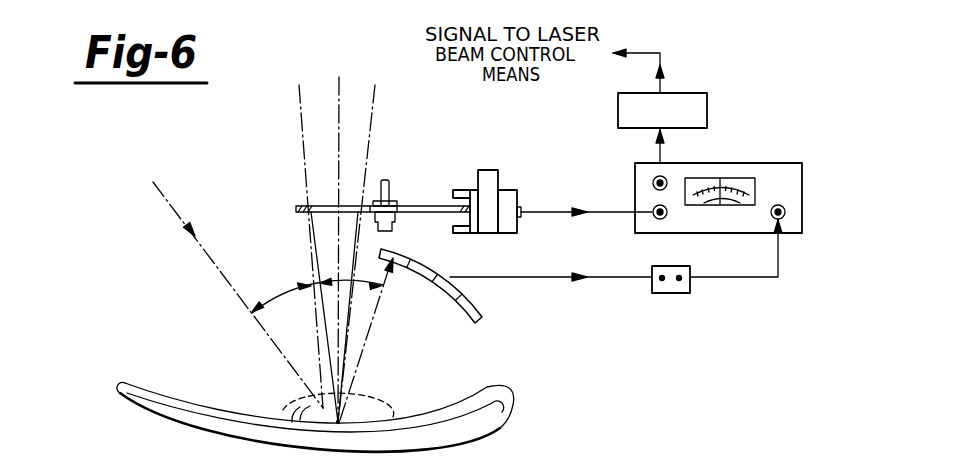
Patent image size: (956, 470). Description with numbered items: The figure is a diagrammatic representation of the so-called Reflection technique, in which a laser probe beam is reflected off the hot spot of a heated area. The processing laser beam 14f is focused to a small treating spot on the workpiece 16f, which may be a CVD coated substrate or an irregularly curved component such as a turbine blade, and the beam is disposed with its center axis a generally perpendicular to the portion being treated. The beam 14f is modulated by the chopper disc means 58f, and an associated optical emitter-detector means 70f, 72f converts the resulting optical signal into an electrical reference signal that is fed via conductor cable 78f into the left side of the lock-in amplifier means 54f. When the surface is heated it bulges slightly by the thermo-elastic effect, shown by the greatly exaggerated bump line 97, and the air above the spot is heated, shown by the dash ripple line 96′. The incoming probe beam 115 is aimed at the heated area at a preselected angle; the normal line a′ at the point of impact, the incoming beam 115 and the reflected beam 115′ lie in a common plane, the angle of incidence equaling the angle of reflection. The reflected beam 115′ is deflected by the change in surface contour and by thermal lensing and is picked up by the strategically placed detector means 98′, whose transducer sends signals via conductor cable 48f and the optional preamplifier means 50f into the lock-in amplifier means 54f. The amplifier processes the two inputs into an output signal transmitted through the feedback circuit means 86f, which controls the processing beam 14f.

The processing laser beam 14f is at (300, 110).
The chopper disc means 58f is at (307, 207).
The center axis a is at (339, 122).
The normal line a′ is at (307, 240).
The optical emitter-detector means 70f is at (468, 186).
The optical emitter-detector means 72f is at (511, 176).
The conductor cable 78f is at (537, 210).
The feedback circuit means 86f is at (683, 93).
The lock-in amplifier means 54f is at (822, 113).
The preamplifier means 50f is at (672, 266).
The conductor cable 48f is at (603, 277).
The incoming probe beam 115 is at (163, 197).
The reflected beam 115′ is at (360, 342).
The detector means 98′ is at (418, 270).
The dash ripple line 96′ is at (307, 407).
The bump line 97 is at (300, 407).
The workpiece 16f is at (467, 427).